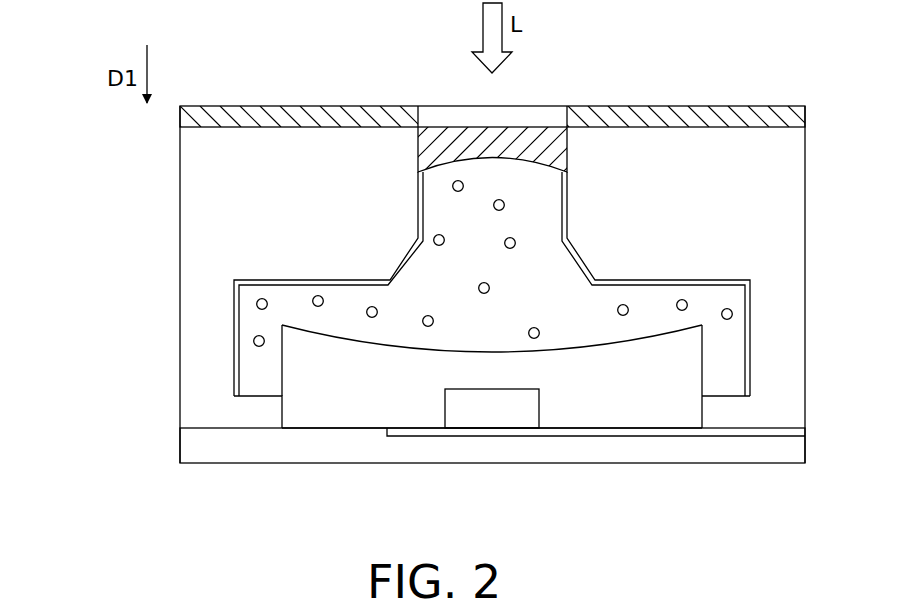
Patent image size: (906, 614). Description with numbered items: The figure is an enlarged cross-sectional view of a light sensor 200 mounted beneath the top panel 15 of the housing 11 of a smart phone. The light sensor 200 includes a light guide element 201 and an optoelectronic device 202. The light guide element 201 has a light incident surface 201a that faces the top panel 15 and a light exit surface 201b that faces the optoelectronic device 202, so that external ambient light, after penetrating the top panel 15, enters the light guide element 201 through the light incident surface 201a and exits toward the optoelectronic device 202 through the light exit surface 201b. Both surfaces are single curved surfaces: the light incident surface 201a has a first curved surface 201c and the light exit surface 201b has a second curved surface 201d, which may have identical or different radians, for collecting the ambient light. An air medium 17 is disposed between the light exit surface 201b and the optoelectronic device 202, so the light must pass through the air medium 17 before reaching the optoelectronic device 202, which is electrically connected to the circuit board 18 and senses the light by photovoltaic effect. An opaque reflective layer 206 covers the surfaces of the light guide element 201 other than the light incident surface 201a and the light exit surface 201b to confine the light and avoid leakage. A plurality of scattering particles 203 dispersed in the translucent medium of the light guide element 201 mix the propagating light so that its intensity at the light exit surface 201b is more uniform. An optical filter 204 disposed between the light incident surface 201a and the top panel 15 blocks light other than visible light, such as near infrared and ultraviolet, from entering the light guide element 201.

The light sensor 200 is at (82, 29).
The housing 11 is at (671, 118).
The top panel 15 is at (520, 117).
The air medium 17 is at (655, 353).
The circuit board 18 is at (727, 432).
The light guide element 201 is at (70, 355).
The light incident surface 201a is at (575, 91).
The light exit surface 201b is at (408, 492).
The first curved surface 201c is at (429, 78).
The second curved surface 201d is at (336, 335).
The optoelectronic device 202 is at (495, 403).
The scattering particles 203 is at (433, 241).
The optical filter 204 is at (432, 151).
The opaque reflective layer 206 is at (234, 293).